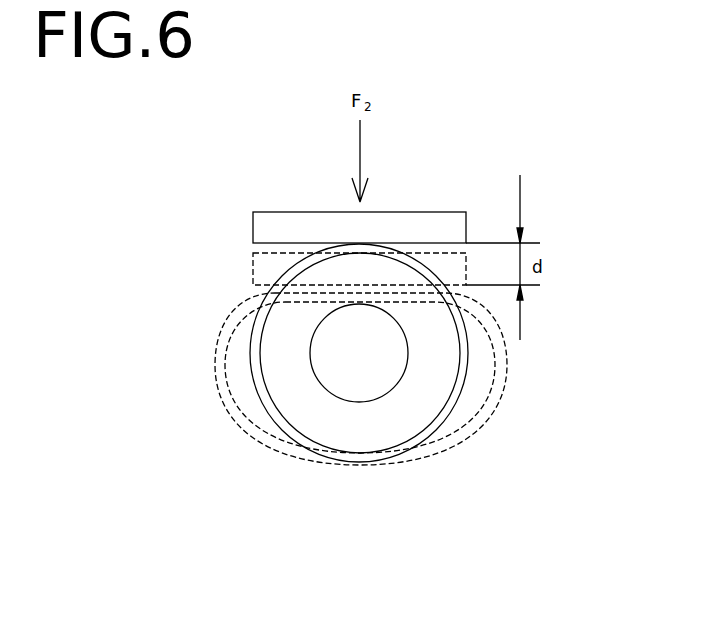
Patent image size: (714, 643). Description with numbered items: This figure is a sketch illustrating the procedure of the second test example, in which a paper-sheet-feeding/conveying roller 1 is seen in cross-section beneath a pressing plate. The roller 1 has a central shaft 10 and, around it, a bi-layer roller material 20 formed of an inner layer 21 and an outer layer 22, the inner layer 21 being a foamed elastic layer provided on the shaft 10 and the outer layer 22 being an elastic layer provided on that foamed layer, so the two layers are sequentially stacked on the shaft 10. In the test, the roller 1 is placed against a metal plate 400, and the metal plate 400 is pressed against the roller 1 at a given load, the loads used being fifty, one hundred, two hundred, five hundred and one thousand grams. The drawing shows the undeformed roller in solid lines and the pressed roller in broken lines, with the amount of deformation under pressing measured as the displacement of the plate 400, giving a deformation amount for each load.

The paper-sheet-feeding/conveying roller 1 is at (401, 404).
The shaft 10 is at (368, 402).
The bi-layer roller material 20 is at (416, 359).
The inner layer 21 is at (447, 373).
The outer layer 22 is at (445, 420).
The metal plate 400 is at (253, 227).